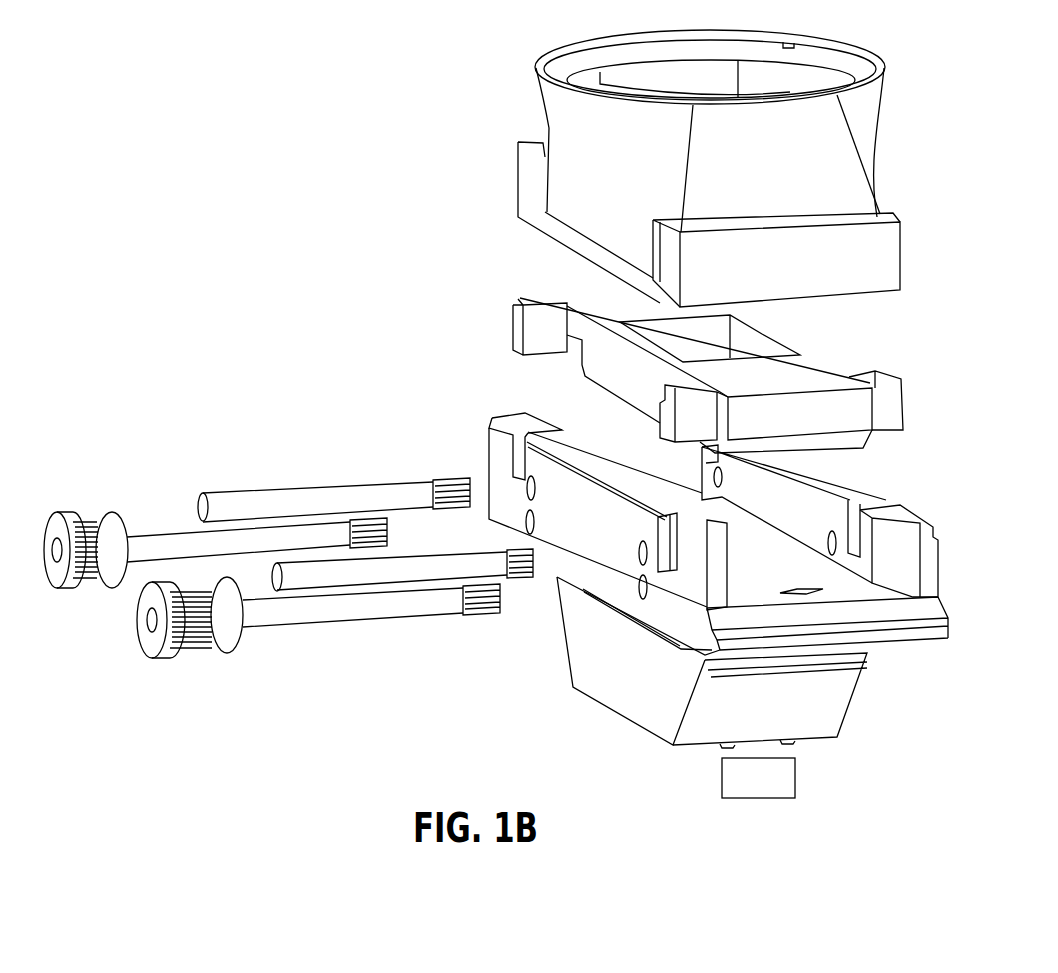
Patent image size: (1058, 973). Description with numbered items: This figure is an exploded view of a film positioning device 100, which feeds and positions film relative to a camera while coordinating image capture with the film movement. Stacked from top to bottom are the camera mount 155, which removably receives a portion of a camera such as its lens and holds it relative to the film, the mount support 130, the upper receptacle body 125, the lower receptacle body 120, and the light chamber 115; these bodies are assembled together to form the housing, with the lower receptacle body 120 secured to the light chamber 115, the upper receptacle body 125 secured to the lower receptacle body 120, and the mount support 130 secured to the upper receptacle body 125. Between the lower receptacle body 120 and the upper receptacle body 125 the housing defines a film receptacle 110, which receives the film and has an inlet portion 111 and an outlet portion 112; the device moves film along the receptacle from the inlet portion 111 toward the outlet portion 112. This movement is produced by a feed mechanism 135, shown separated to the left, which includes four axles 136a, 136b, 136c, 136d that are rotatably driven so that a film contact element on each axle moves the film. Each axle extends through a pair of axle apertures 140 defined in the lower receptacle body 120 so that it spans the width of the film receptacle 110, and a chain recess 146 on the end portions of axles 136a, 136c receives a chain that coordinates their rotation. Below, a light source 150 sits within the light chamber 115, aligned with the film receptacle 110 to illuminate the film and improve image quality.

The film positioning device 100 is at (255, 112).
The film receptacle 110 is at (762, 578).
The inlet portion 111 is at (838, 587).
The outlet portion 112 is at (690, 496).
The light chamber 115 is at (627, 693).
The lower receptacle body 120 is at (604, 551).
The upper receptacle body 125 is at (632, 381).
The mount support 130 is at (848, 276).
The feed mechanism 135 is at (193, 453).
The axle 136a is at (310, 615).
The axle 136b is at (435, 575).
The axle 136c is at (153, 535).
The axle 136d is at (328, 485).
The axle apertures 140 is at (640, 547).
The chain recess 146 is at (207, 633).
The light source 150 is at (797, 780).
The camera mount 155 is at (878, 130).